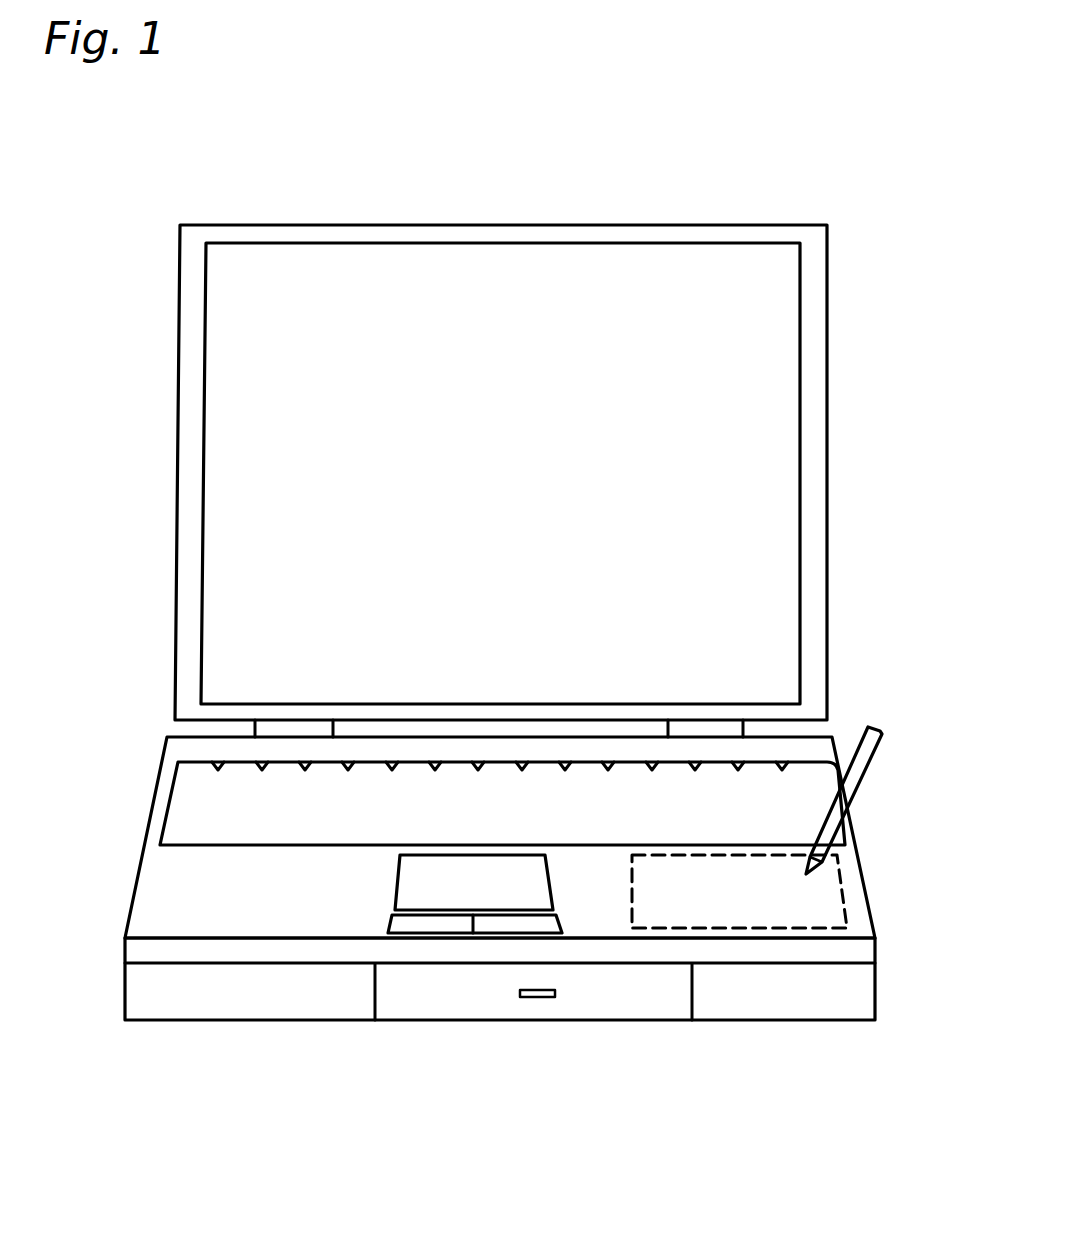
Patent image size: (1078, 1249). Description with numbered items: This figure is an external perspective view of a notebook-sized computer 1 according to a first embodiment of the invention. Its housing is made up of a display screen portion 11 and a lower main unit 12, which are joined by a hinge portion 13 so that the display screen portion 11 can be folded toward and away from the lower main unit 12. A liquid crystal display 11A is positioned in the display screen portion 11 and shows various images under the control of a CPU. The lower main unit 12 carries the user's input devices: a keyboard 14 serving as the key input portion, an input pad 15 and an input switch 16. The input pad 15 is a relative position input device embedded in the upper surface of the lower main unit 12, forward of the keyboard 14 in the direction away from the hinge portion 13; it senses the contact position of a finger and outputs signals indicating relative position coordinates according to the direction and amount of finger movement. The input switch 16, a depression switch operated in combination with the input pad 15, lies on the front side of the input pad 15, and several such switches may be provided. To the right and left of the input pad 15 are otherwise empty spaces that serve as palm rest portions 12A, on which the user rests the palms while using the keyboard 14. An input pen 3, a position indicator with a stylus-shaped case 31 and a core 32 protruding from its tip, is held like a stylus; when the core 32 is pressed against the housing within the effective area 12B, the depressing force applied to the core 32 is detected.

The notebook-sized computer 1 is at (889, 214).
The display screen portion 11 is at (817, 342).
The liquid crystal display 11A is at (778, 305).
The lower main unit 12 is at (123, 952).
The palm rest portions 12A is at (247, 918).
The effective area 12B is at (810, 930).
The hinge portion 13 is at (246, 728).
The keyboard 14 is at (185, 822).
The input pad 15 is at (402, 887).
The input switch 16 is at (498, 927).
The input pen 3 is at (888, 718).
The case 31 is at (868, 753).
The core 32 is at (806, 874).